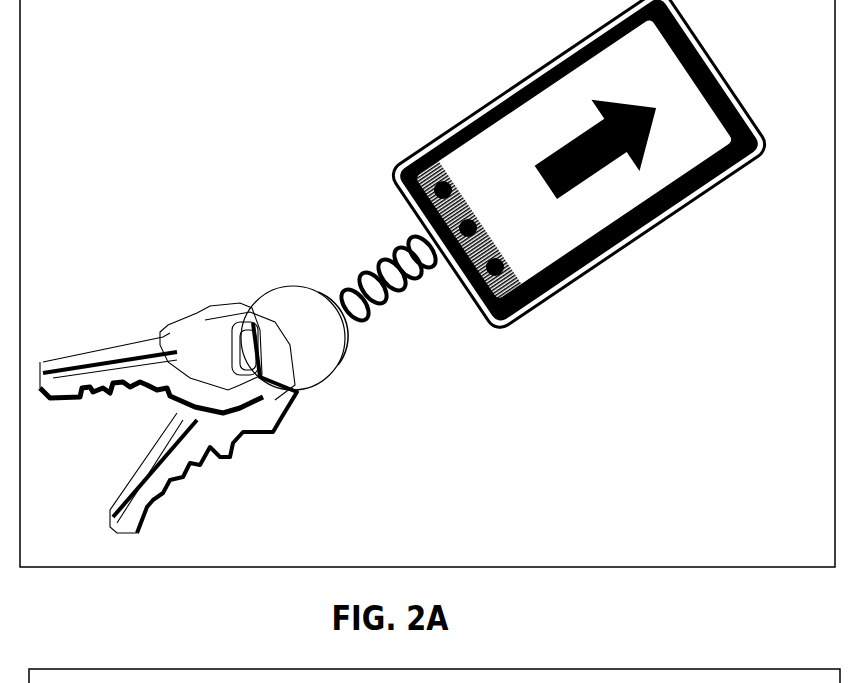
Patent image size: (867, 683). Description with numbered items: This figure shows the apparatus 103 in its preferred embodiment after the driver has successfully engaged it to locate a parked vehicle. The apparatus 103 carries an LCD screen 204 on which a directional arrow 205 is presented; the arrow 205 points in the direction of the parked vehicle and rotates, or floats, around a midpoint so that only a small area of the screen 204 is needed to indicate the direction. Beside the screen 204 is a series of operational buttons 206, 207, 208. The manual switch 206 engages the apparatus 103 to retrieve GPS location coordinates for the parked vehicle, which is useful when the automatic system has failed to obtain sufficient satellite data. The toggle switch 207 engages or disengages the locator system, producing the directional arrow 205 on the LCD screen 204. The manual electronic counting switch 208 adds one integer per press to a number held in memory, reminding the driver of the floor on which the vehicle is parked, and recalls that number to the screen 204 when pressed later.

The apparatus 103 is at (388, 173).
The LCD screen 204 is at (657, 80).
The directional arrow 205 is at (653, 129).
The manual switch 206 is at (467, 182).
The toggle switch 207 is at (489, 222).
The manual electronic counting switch 208 is at (510, 248).